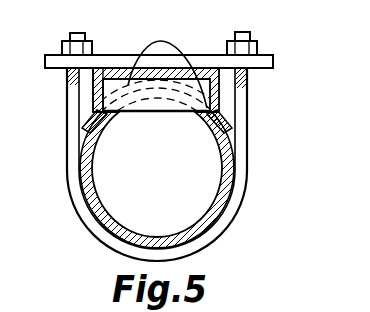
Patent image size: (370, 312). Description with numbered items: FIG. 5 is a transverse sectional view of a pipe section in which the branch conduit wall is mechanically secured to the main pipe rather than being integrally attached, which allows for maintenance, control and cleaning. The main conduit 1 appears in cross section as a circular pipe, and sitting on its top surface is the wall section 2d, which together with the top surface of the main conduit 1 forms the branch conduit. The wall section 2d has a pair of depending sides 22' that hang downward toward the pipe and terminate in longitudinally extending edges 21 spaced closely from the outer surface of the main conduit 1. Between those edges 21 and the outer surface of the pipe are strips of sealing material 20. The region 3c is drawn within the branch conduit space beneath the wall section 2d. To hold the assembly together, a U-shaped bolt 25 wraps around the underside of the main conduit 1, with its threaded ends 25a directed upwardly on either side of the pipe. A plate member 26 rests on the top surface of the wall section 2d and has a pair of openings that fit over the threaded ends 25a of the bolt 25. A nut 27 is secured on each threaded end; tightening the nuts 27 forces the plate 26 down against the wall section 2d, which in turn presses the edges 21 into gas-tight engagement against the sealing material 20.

The main conduit 1 is at (235, 180).
The wall section 2d is at (98, 100).
The pipe top portion (hidden) 3c is at (165, 108).
The strips of sealing material 20 is at (237, 125).
The longitudinally extending edges 21 is at (237, 113).
The depending sides 22' is at (167, 59).
The U-shaped bolt 25 is at (239, 210).
The threaded ends 25a is at (72, 33).
The plate member 26 is at (273, 62).
The nut 27 is at (257, 45).